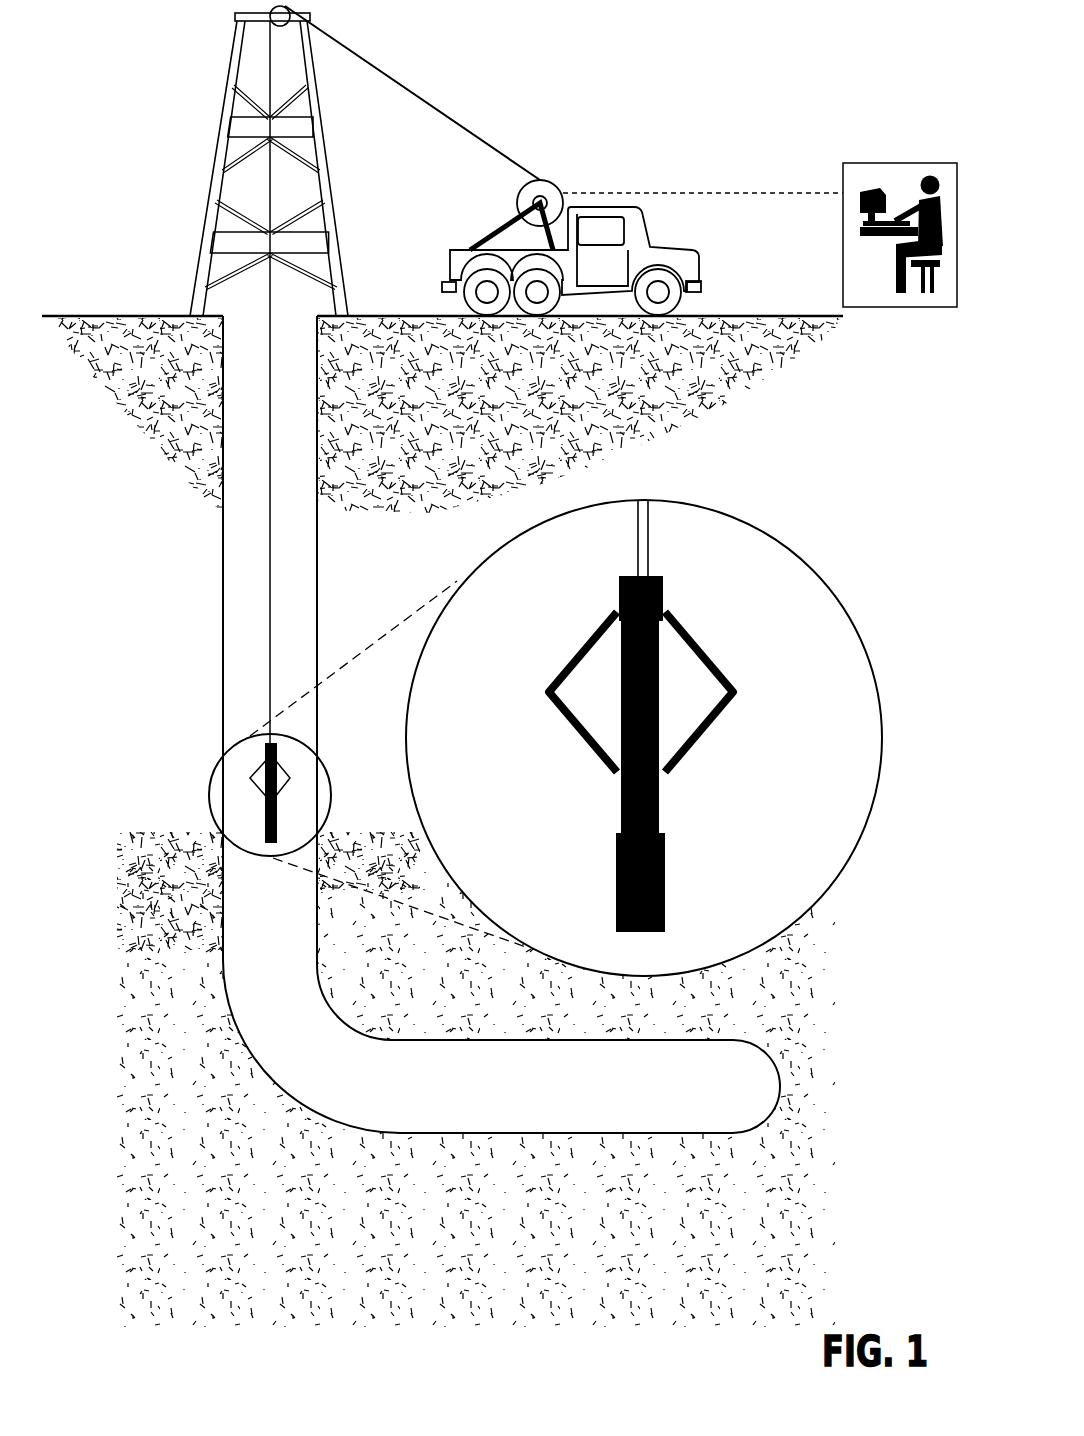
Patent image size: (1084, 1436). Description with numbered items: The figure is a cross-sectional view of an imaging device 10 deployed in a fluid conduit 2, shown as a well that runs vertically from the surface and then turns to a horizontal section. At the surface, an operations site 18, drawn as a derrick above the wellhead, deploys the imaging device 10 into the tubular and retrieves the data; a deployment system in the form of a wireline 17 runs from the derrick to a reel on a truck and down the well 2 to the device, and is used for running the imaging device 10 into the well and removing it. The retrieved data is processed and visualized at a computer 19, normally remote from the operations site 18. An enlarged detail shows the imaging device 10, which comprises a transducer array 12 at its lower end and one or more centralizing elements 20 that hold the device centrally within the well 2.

The fluid conduit 2 is at (281, 922).
The imaging device 10 is at (243, 786).
The transducer array 12 is at (663, 879).
The wireline 17 is at (441, 107).
The operations site 18 is at (221, 107).
The computer 19 is at (760, 195).
The centralizing elements 20 is at (681, 761).